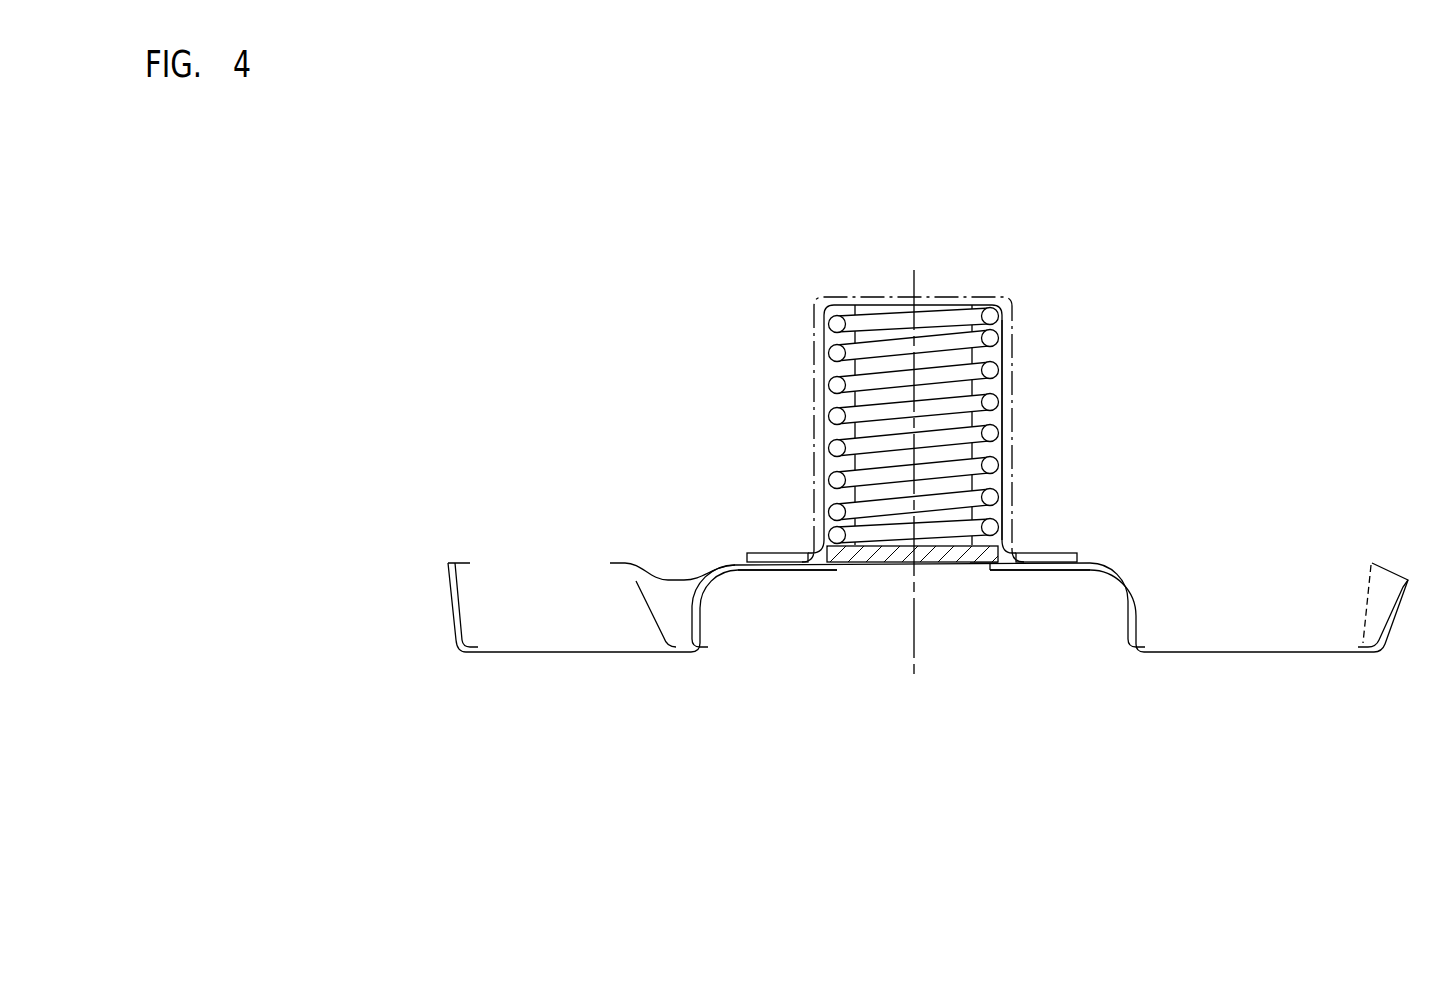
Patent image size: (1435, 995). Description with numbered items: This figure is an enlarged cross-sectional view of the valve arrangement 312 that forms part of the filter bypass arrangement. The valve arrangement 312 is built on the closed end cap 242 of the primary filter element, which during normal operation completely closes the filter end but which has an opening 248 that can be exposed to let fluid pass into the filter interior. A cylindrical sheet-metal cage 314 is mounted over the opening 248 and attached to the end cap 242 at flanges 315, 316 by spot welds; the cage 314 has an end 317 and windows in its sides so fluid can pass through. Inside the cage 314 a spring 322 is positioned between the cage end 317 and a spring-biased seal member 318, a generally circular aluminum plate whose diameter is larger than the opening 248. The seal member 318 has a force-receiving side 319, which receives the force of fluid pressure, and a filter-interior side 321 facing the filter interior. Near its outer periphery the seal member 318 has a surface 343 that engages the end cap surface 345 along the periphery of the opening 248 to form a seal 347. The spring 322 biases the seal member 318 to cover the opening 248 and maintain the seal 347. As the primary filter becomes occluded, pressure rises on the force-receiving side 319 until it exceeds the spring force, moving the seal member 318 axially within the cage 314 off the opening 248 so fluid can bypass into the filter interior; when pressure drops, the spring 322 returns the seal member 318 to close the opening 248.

The valve arrangement 312 is at (742, 325).
The end cap 242 is at (1250, 647).
The opening 248 is at (818, 595).
The cage end 317 is at (955, 303).
The cage 314 is at (1008, 332).
The force-receiving side 319 is at (883, 562).
The spring 322 is at (992, 402).
The filter-interior side 321 is at (955, 545).
The surface 343 is at (977, 563).
The flange 316 is at (1062, 556).
The flange 315 is at (770, 553).
The seal member 318 is at (927, 562).
The seal 347 is at (983, 565).
The end cap surface 345 is at (995, 565).